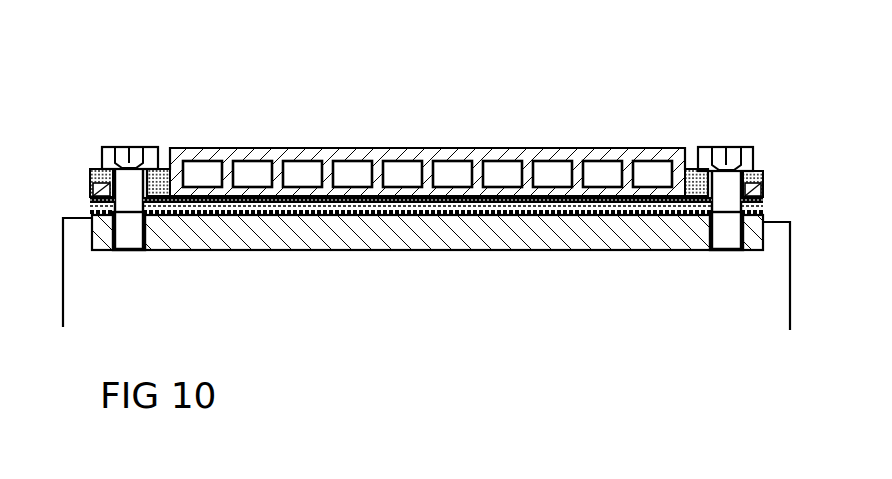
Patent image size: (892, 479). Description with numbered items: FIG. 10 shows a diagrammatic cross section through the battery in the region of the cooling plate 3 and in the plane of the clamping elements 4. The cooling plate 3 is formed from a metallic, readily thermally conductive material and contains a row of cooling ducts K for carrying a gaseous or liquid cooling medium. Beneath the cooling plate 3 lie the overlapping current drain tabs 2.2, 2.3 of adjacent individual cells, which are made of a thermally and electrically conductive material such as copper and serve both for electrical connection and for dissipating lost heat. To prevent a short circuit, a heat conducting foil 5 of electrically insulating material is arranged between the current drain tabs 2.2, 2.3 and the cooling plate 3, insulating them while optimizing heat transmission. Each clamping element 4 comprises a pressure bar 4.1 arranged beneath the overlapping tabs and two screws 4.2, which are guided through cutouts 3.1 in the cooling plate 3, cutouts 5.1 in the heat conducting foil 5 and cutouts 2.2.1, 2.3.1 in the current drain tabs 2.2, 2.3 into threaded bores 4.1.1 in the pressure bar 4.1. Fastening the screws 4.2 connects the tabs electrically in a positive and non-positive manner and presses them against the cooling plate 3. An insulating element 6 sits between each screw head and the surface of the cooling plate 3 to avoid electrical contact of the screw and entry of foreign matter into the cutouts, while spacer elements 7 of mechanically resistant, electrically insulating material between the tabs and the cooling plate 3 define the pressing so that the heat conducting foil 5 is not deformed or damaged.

The clamping element 4 is at (424, 201).
The pressure bar 4.1 is at (437, 240).
The screw 4.2 is at (112, 158).
The threaded bore 4.1.1 is at (147, 242).
The cooling plate 3 is at (328, 166).
The cutout in the cooling plate 3.1 is at (763, 187).
The cooling duct K is at (258, 170).
The heat conducting foil 5 is at (420, 200).
The cutout in the heat conducting foil 5.1 is at (167, 212).
The insulating element 6 is at (92, 173).
The spacer element 7 is at (92, 196).
The current drain tab 2.2 is at (503, 210).
The cutout in the current drain tab 2.2.1 is at (688, 208).
The current drain tab 2.3 is at (325, 212).
The cutout in the current drain tab 2.3.1 is at (702, 214).